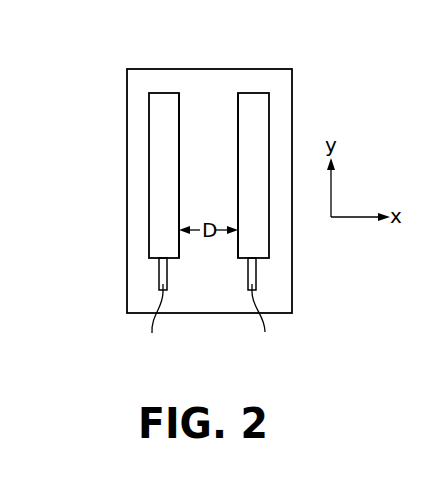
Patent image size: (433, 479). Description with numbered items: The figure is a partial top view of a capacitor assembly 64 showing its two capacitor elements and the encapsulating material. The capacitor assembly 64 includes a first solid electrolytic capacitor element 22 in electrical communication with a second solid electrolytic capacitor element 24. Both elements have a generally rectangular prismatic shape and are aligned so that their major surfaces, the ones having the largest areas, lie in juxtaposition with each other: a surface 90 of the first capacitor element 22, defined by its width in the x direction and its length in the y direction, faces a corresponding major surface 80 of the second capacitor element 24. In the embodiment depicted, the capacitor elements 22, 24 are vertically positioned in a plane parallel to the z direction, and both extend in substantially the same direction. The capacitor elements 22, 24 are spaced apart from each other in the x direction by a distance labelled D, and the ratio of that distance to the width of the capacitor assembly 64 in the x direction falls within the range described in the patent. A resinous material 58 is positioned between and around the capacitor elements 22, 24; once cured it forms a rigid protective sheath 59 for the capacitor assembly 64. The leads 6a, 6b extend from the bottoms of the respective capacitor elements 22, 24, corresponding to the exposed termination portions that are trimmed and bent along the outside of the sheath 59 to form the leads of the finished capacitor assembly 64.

The protective sheath 59 is at (116, 100).
The capacitor assembly 64 is at (228, 52).
The first solid electrolytic capacitor element 22 is at (174, 188).
The second solid electrolytic capacitor element 24 is at (264, 188).
The surface 90 is at (180, 123).
The major surface 80 is at (238, 210).
The first lead 6a is at (153, 310).
The second lead 6b is at (265, 309).
The resinous material 58 is at (203, 247).